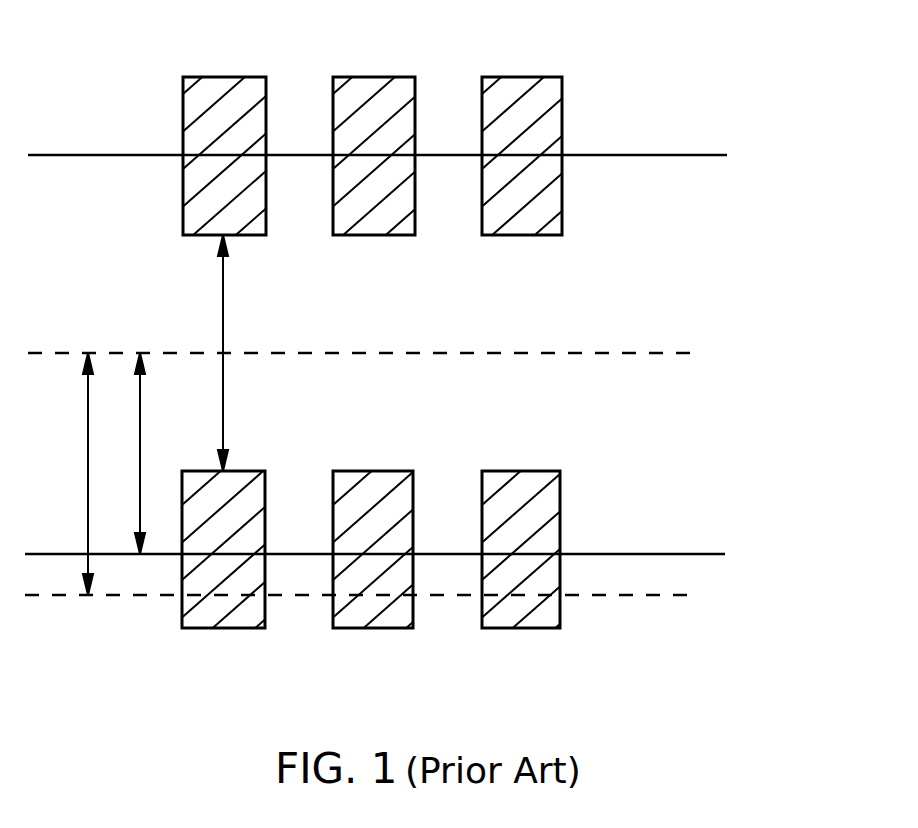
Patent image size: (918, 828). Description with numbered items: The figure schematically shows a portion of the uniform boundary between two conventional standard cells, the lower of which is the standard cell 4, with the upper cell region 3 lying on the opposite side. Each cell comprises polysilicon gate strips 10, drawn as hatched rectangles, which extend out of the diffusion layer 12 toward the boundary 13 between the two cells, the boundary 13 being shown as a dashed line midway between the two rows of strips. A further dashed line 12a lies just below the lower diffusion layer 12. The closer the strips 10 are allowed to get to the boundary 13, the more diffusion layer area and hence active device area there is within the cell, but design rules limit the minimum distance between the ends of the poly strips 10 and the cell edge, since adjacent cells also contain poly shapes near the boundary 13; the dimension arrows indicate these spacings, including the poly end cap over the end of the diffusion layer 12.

The polysilicon gate strip 10 is at (247, 77).
The diffusion layer 12 is at (698, 124).
The offset reference line 12a is at (703, 597).
The boundary 13 is at (713, 357).
The upper layer region 3 is at (705, 257).
The standard cell 4 is at (705, 463).